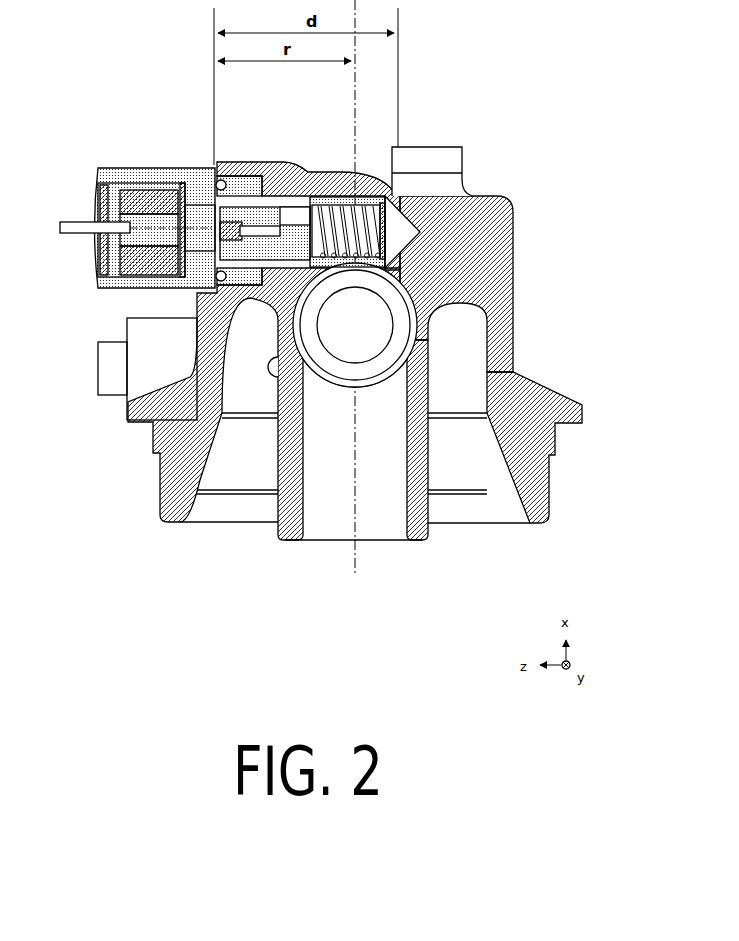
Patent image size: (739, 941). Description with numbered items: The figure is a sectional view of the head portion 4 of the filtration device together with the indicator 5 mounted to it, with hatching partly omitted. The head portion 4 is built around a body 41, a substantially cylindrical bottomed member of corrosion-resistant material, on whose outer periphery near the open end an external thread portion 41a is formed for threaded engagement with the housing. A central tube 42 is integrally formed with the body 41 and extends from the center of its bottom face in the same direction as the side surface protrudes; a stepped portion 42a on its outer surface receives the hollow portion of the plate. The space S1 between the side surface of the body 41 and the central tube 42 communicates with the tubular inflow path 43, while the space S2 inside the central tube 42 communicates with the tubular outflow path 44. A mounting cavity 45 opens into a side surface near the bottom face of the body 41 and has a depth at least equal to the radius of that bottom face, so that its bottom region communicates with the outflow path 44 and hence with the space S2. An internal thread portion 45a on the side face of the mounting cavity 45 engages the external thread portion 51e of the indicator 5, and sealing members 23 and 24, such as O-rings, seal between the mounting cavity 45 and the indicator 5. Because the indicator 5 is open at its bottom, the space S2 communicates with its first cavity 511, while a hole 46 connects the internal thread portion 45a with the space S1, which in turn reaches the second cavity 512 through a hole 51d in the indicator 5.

The head portion 4 is at (527, 177).
The indicator 5 is at (140, 166).
The sealing member 23 is at (217, 192).
The sealing member 24 is at (300, 195).
The body 41 is at (527, 438).
The external thread portion 41a is at (548, 495).
The central tube 42 is at (413, 388).
The stepped portion 42a is at (425, 487).
The inflow path 43 is at (110, 395).
The outflow path 44 is at (372, 302).
The mounting cavity 45 is at (405, 197).
The internal thread portion 45a is at (258, 187).
The hole 46 is at (248, 290).
The hole 51d is at (248, 238).
The external thread portion 51e is at (232, 200).
The first cavity 511 is at (395, 248).
The second cavity 512 is at (100, 272).
The space S1 is at (228, 512).
The space S2 is at (325, 513).